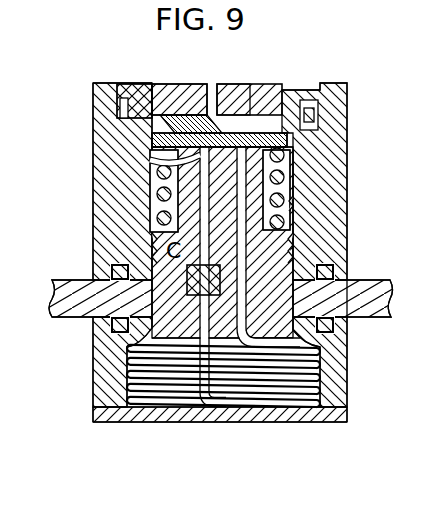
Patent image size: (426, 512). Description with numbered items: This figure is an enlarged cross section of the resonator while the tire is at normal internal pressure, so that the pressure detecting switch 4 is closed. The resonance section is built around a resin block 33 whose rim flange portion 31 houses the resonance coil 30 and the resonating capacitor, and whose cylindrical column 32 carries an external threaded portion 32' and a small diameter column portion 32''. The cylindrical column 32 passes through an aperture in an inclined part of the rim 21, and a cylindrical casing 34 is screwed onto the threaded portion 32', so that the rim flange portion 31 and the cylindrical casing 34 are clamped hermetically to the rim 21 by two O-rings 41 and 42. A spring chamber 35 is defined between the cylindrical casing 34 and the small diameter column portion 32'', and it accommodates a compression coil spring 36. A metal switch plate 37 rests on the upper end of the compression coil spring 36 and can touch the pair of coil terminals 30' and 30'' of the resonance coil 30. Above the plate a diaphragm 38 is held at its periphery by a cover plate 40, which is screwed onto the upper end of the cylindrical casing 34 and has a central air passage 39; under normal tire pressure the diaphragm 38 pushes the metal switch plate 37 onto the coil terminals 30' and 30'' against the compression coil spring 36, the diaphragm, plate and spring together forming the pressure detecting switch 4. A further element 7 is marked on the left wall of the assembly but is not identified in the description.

The pressure detecting switch 4 is at (160, 95).
The housing side wall 7 is at (93, 196).
The rim 21 is at (64, 315).
The resonance coil 30 is at (223, 304).
The coil terminal 30' is at (154, 168).
The coil terminal 30'' is at (322, 87).
The rim flange portion 31 is at (348, 390).
The cylindrical column 32 is at (270, 263).
The threaded portion 32' is at (270, 248).
The small diameter column portion 32'' is at (341, 187).
The block 33 is at (106, 368).
The cylindrical casing 34 is at (346, 213).
The spring chamber 35 is at (290, 218).
The compression coil spring 36 is at (283, 176).
The metal switch plate 37 is at (300, 140).
The diaphragm 38 is at (180, 138).
The air passage 39 is at (228, 98).
The cover plate 40 is at (263, 110).
The O-ring 41 is at (111, 270).
The O-ring 42 is at (116, 334).